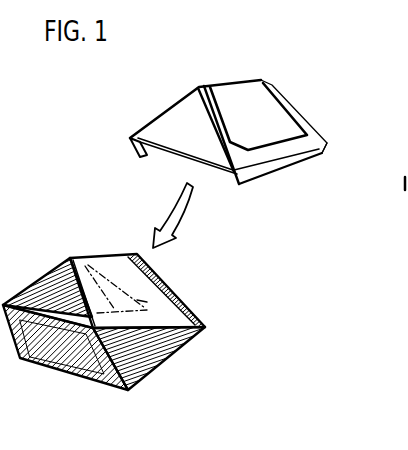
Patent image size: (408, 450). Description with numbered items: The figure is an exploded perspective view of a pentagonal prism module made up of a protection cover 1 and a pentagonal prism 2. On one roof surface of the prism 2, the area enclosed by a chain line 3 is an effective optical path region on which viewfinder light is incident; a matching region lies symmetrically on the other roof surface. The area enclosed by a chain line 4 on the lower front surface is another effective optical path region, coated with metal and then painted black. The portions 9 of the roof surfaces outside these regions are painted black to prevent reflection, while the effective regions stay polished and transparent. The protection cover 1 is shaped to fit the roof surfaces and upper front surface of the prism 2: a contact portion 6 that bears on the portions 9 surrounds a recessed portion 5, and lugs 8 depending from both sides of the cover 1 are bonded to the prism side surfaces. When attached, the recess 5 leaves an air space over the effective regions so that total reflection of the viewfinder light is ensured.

The protection cover 1 is at (270, 157).
The pentagonal prism 2 is at (133, 368).
The chain line 3 is at (140, 302).
The chain line 4 is at (53, 350).
The recessed portion 5 is at (270, 114).
The contact portion 6 is at (320, 150).
The lugs 8 is at (157, 157).
The portions out of the effective optical path regions 9 is at (178, 348).